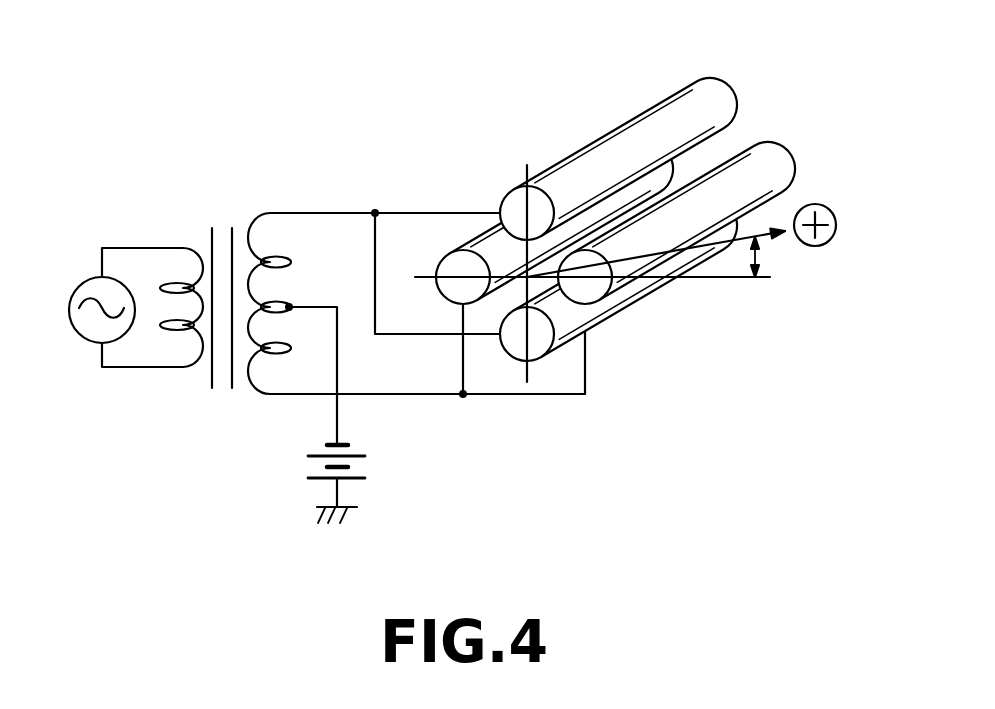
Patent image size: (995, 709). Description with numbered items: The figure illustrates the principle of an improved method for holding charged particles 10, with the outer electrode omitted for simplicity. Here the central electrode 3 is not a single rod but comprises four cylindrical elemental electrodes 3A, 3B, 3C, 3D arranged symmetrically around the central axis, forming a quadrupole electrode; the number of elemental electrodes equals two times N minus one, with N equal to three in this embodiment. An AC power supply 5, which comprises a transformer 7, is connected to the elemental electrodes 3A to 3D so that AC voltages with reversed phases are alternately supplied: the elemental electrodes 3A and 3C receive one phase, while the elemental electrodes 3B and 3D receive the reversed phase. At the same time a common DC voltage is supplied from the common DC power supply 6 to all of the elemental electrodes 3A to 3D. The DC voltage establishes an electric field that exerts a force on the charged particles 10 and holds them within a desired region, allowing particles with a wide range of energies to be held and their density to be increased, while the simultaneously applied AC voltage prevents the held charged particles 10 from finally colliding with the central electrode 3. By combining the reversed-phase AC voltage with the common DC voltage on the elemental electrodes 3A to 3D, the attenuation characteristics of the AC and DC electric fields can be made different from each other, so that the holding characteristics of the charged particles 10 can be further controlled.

The central electrode 3 is at (643, 216).
The elemental electrode 3A is at (617, 133).
The elemental electrode 3B is at (452, 263).
The elemental electrode 3C is at (645, 297).
The elemental electrode 3D is at (788, 175).
The AC power supply 5 is at (65, 178).
The DC power supply 6 is at (362, 465).
The transformer 7 is at (293, 412).
The charged particles 10 is at (828, 243).